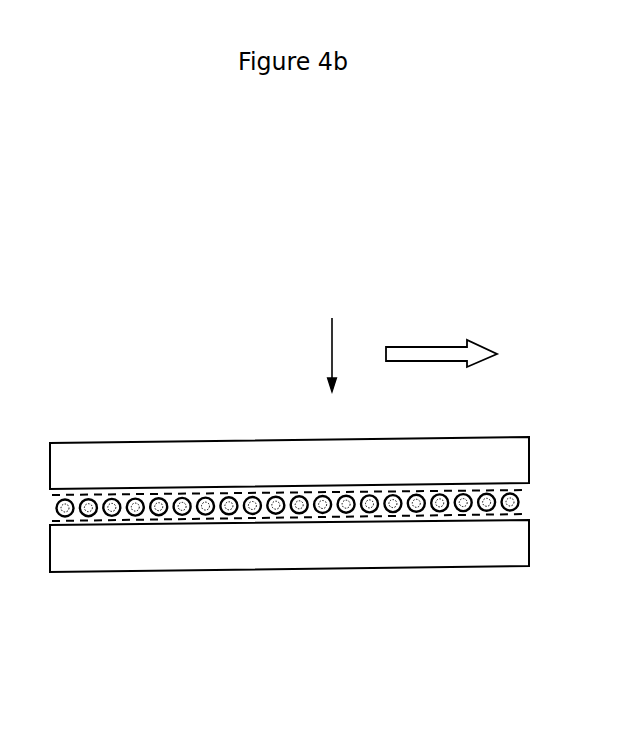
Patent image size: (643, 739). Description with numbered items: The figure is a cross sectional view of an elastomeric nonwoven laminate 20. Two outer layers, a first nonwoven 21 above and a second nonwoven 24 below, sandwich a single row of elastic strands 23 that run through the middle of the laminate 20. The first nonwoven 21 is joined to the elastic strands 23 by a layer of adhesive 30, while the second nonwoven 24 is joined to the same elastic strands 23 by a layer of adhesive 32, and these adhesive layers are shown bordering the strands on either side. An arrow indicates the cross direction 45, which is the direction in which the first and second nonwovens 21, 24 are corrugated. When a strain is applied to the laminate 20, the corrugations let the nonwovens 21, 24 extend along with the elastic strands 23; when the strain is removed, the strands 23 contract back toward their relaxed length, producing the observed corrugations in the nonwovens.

The elastomeric laminate 20 is at (333, 336).
The cross direction 45 is at (429, 342).
The first nonwoven 21 is at (283, 438).
The second nonwoven 24 is at (385, 567).
The adhesive 30 is at (527, 492).
The adhesive 32 is at (528, 513).
The elastic strands 23 is at (527, 495).